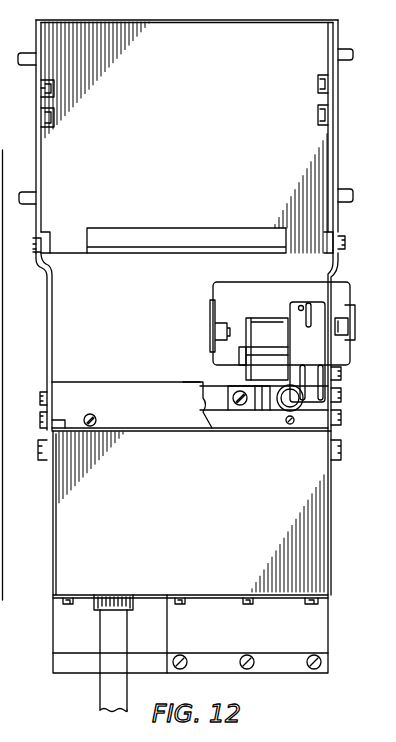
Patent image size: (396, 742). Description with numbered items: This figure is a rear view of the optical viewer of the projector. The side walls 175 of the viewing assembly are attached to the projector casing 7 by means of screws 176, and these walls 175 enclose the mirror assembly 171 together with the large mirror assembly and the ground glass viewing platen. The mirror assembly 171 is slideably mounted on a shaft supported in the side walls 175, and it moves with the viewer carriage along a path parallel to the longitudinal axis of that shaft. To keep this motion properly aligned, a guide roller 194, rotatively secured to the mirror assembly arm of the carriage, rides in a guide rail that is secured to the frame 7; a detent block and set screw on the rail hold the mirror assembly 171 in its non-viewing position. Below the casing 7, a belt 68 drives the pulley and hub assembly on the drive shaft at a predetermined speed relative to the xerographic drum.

The projector casing 7 is at (331, 534).
The side walls 175 is at (47, 280).
The mirror assembly 171 is at (203, 295).
The guide roller 194 is at (272, 409).
The screws 176 is at (45, 450).
The belt 68 is at (101, 696).